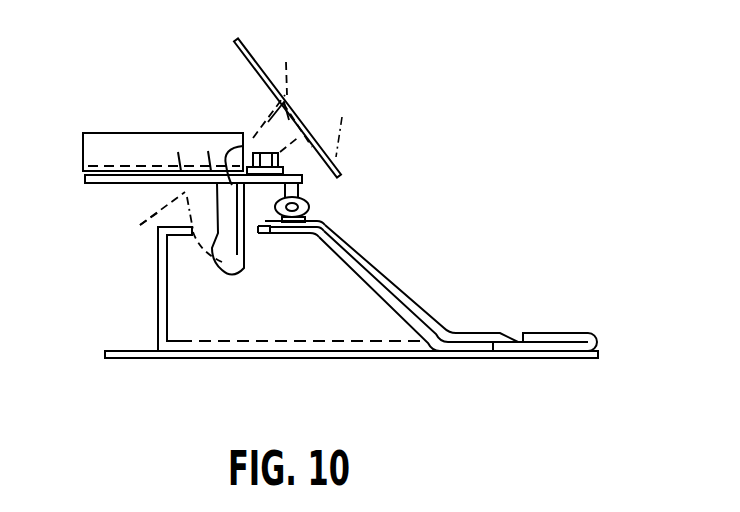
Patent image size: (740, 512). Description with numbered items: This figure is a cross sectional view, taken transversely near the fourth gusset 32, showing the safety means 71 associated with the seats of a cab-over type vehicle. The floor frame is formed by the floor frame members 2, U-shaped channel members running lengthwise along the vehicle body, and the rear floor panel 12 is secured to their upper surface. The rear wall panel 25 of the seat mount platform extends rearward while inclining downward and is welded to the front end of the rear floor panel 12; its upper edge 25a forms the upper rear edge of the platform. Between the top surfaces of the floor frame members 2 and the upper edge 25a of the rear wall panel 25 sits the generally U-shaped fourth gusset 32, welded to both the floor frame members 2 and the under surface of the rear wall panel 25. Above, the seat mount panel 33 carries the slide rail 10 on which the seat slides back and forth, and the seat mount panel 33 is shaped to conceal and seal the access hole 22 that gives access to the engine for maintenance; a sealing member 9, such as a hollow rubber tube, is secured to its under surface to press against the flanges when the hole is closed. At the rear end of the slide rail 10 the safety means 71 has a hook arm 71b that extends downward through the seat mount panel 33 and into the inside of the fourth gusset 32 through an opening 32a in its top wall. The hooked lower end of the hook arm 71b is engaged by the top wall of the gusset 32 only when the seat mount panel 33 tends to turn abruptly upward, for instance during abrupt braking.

The floor frame member 2 is at (127, 351).
The sealing member 9 is at (308, 202).
The slide rail 10 is at (135, 131).
The rear floor panel 12 is at (568, 331).
The access hole 22 is at (270, 235).
The rear wall panel 25 is at (437, 323).
The upper edge of rear wall panel 25a is at (310, 214).
The fourth gusset 32 is at (152, 275).
The opening in top wall of gusset 32a is at (254, 232).
The seat mount panel 33 is at (293, 178).
The safety means 71 is at (136, 213).
The hook arm 71b is at (215, 232).